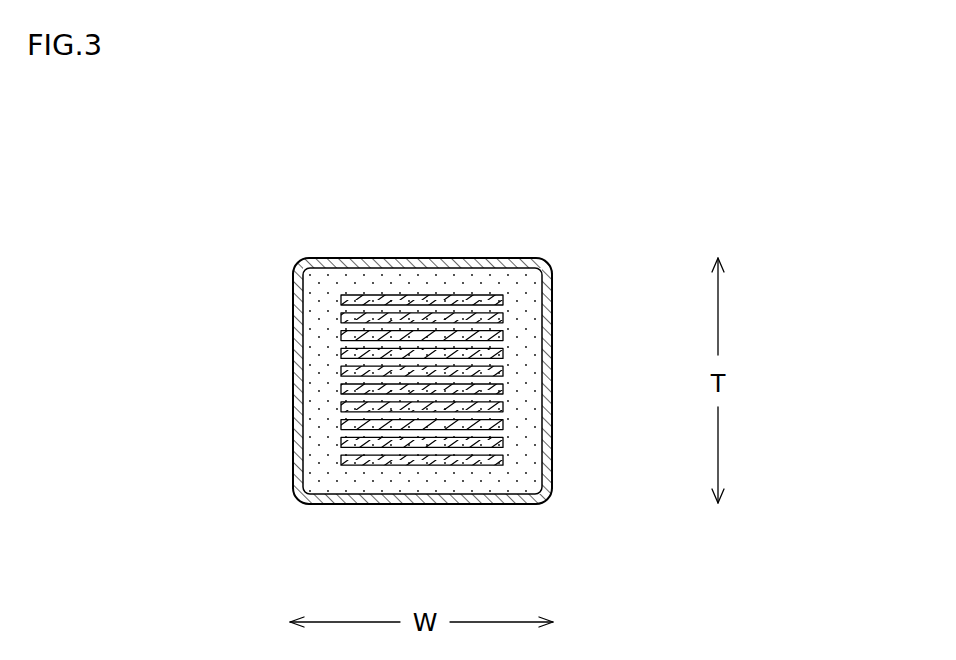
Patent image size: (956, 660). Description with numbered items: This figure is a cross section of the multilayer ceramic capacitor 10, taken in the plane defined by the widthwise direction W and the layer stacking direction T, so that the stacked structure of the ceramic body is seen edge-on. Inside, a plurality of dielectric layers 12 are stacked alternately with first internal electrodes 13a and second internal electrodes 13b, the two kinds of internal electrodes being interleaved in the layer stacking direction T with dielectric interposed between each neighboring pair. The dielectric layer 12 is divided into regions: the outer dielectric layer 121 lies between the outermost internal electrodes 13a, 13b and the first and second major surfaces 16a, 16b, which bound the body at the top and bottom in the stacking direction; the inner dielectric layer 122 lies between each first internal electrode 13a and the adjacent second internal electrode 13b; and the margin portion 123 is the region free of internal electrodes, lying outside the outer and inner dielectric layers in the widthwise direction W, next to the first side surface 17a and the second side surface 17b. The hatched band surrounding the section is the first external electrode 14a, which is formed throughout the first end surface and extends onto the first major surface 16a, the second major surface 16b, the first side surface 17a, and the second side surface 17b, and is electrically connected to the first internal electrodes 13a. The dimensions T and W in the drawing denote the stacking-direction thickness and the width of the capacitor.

The multilayer ceramic capacitor 10 is at (559, 183).
The dielectric layer 12 is at (422, 381).
The outer dielectric layer 121 is at (415, 283).
The inner dielectric layer 122 is at (383, 298).
The margin portion 123 is at (322, 318).
The first internal electrode 13a is at (484, 331).
The second internal electrode 13b is at (488, 430).
The first external electrode 14a is at (293, 407).
The first major surface 16a is at (340, 260).
The second major surface 16b is at (425, 505).
The first side surface 17a is at (303, 340).
The second side surface 17b is at (545, 335).